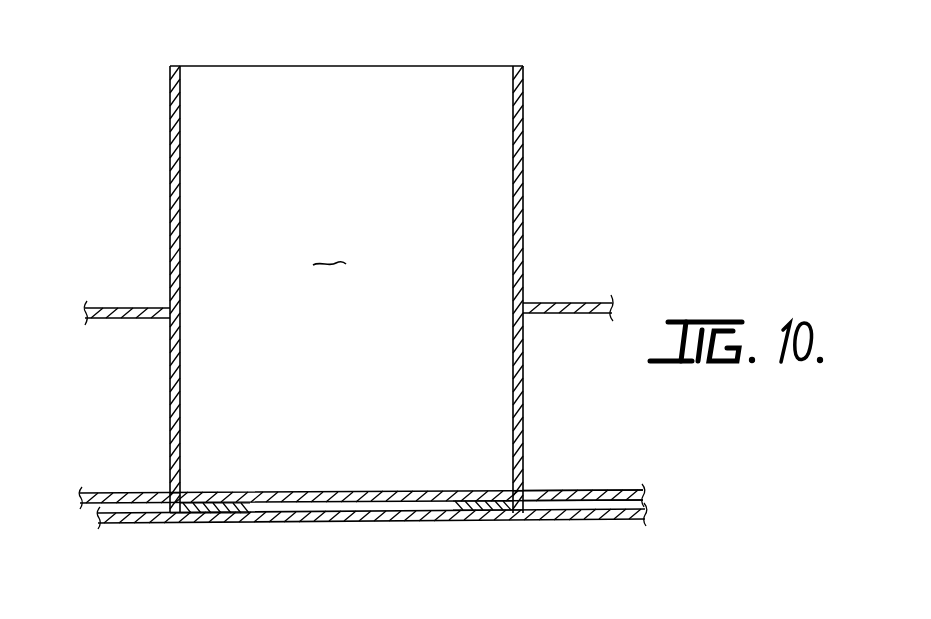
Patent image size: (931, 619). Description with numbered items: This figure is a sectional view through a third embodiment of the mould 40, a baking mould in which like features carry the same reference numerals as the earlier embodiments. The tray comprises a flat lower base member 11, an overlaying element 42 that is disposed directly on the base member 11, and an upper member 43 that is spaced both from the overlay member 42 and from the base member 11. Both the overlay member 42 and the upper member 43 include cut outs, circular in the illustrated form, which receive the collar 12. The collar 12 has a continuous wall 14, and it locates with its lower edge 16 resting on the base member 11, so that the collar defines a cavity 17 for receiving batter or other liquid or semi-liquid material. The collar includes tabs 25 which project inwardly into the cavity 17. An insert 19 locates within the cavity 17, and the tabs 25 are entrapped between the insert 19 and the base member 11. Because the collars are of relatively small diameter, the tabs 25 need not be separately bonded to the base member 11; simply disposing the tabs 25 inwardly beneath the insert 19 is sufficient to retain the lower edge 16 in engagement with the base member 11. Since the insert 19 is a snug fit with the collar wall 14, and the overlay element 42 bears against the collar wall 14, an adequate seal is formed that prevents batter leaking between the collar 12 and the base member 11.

The base member 11 is at (333, 522).
The collar 12 is at (163, 157).
The collar wall 14 is at (520, 250).
The lower edge 16 is at (180, 512).
The cavity 17 is at (331, 249).
The insert 19 is at (343, 492).
The tabs 25 is at (217, 508).
The third embodiment of the mould 40 is at (535, 192).
The overlaying element 42 is at (577, 490).
The upper member 43 is at (130, 308).